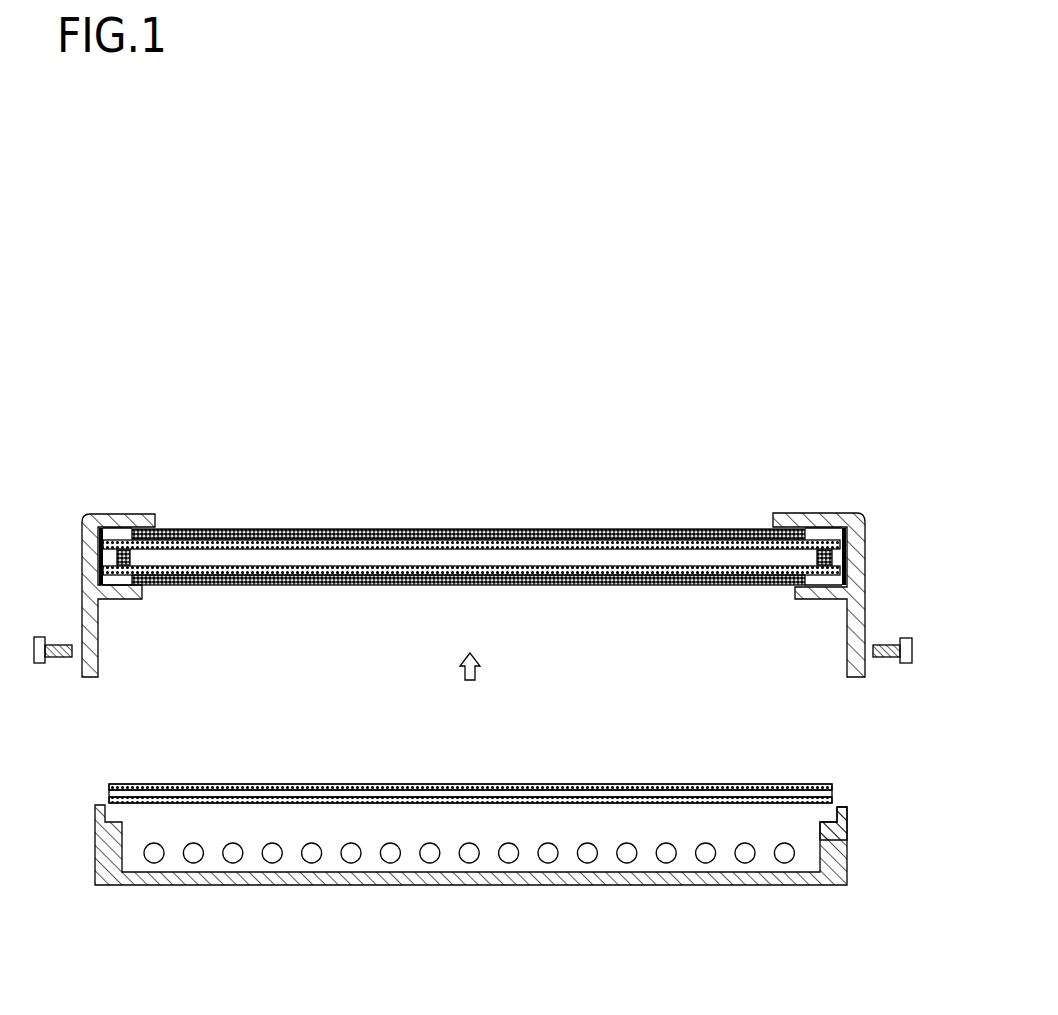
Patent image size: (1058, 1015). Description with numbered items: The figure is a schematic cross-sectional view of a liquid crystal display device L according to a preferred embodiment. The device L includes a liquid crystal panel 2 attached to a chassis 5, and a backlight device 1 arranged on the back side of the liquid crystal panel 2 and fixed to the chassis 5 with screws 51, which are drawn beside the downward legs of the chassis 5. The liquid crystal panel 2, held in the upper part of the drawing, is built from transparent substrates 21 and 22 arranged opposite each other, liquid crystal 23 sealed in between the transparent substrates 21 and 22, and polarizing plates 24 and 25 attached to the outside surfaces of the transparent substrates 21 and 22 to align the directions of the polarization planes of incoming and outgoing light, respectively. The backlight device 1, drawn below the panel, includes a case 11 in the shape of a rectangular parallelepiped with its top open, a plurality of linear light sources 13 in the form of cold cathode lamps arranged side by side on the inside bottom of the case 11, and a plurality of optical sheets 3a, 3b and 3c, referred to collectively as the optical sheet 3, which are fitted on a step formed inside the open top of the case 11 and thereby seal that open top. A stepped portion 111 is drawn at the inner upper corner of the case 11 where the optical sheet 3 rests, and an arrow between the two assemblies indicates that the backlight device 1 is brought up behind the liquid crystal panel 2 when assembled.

The liquid crystal display device L is at (791, 387).
The backlight device 1 is at (656, 711).
The liquid crystal panel 2 is at (664, 495).
The optical sheet 3 is at (470, 733).
The optical sheet 3a is at (201, 784).
The optical sheet 3b is at (292, 785).
The optical sheet 3c is at (376, 785).
The chassis 5 is at (811, 512).
The case 11 is at (637, 886).
The linear light sources 13 is at (391, 861).
The transparent substrate 21 is at (340, 545).
The transparent substrate 22 is at (410, 571).
The liquid crystal 23 is at (268, 562).
The polarizing plate 24 is at (487, 535).
The polarizing plate 25 is at (572, 582).
The screws 51 is at (39, 636).
The step portion 111 is at (832, 831).